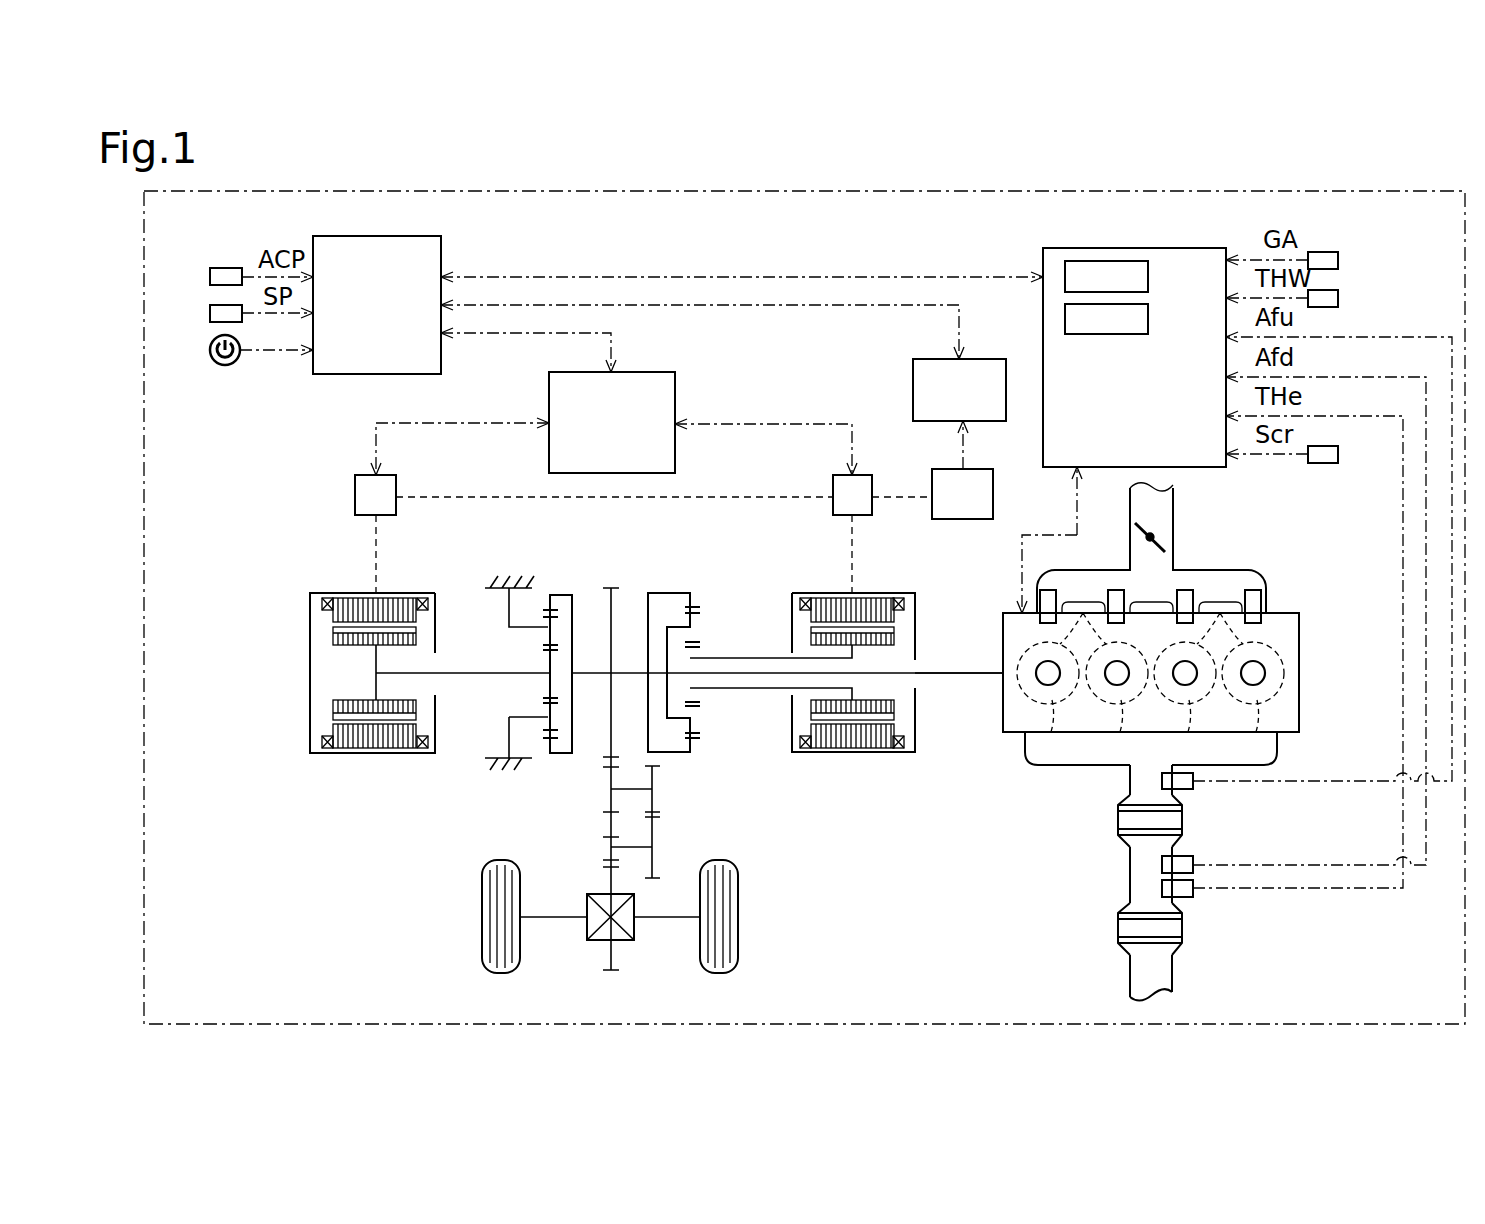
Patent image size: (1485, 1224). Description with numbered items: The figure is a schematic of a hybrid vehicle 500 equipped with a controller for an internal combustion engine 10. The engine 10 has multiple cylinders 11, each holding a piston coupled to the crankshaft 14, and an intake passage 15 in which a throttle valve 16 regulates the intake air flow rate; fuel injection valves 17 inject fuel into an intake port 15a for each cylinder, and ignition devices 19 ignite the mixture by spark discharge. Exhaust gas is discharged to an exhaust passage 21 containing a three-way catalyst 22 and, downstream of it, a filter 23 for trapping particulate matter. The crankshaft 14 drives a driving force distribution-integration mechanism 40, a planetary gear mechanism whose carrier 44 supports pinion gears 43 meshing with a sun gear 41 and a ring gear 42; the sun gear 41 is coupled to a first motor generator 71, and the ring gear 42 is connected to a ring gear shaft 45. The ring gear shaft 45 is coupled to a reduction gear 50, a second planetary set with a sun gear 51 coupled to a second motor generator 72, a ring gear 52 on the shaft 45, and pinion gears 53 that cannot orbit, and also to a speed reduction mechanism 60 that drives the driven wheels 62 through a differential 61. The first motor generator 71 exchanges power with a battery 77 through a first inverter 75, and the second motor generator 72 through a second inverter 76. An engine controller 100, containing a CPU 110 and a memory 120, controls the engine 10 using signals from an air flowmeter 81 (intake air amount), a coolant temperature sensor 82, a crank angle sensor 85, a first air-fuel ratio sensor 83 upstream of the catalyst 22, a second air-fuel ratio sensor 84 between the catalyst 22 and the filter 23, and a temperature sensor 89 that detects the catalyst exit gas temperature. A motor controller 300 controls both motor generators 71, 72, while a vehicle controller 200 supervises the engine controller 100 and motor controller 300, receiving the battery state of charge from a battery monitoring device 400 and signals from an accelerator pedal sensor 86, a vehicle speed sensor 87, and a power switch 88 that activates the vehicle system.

The hybrid vehicle 500 is at (790, 191).
The vehicle controller 200 is at (355, 236).
The motor controller 300 is at (549, 392).
The battery monitoring device 400 is at (913, 378).
The engine controller 100 is at (1157, 248).
The CPU 110 is at (1148, 275).
The memory 120 is at (1148, 318).
The air flowmeter 81 is at (1338, 262).
The coolant temperature sensor 82 is at (1338, 300).
The crank angle sensor 85 is at (1338, 456).
The accelerator pedal sensor 86 is at (210, 278).
The vehicle speed sensor 87 is at (210, 315).
The power switch 88 is at (210, 352).
The second inverter 76 is at (355, 500).
The first inverter 75 is at (833, 512).
The battery 77 is at (993, 495).
The second motor generator 72 is at (310, 684).
The first motor generator 71 is at (907, 590).
The reduction gear 50 is at (500, 671).
The sun gear 51 is at (545, 650).
The ring gear 52 is at (543, 596).
The pinion gears 53 is at (540, 748).
The driving force distribution-integration mechanism 40 is at (698, 696).
The sun gear 41 is at (697, 655).
The ring gear 42 is at (697, 609).
The pinion gears 43 is at (695, 712).
The carrier 44 is at (672, 727).
The ring gear shaft 45 is at (629, 673).
The speed reduction mechanism 60 is at (678, 823).
The differential 61 is at (595, 941).
The driven wheels 62 is at (763, 955).
The crankshaft 14 is at (972, 673).
The internal combustion engine 10 is at (1299, 683).
The intake passage 15 is at (1130, 512).
The intake port 15a is at (1151, 611).
The throttle valve 16 is at (1158, 545).
The fuel injection valves 17 is at (1262, 586).
The ignition devices 19 is at (1243, 679).
The cylinders 11 is at (1151, 732).
The exhaust passage 21 is at (1130, 875).
The three-way catalyst 22 is at (1118, 820).
The filter 23 is at (1118, 928).
The first air-fuel ratio sensor 83 is at (1183, 789).
The second air-fuel ratio sensor 84 is at (1180, 856).
The temperature sensor 89 is at (1180, 897).